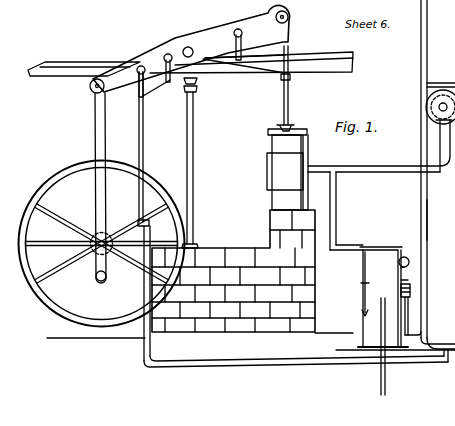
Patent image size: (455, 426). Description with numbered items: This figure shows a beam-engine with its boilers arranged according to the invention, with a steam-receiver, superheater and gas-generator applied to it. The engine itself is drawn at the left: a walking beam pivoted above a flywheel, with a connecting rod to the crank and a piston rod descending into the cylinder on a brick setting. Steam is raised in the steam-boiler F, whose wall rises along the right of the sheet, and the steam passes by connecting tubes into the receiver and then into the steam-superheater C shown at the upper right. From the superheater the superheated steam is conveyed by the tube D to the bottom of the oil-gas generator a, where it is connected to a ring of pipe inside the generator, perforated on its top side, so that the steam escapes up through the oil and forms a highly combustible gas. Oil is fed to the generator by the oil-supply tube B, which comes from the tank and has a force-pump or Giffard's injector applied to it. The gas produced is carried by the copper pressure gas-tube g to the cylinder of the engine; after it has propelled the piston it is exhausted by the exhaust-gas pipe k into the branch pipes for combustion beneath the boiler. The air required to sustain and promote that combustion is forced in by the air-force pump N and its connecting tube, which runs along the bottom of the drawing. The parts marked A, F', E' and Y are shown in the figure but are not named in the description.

The roller support A is at (440, 111).
The oil-supply tube B is at (387, 346).
The steam-superheater C is at (441, 63).
The tube from superheater to gas-generator D is at (433, 174).
The steam-boiler F is at (436, 220).
The valve F' is at (408, 277).
The exhaust valve E' is at (413, 316).
The air-force pump N is at (293, 219).
The coupling Y is at (145, 231).
The oil-gas generator a is at (383, 297).
The copper pressure gas-tube g is at (342, 211).
The exhaust-gas pipe k is at (379, 146).